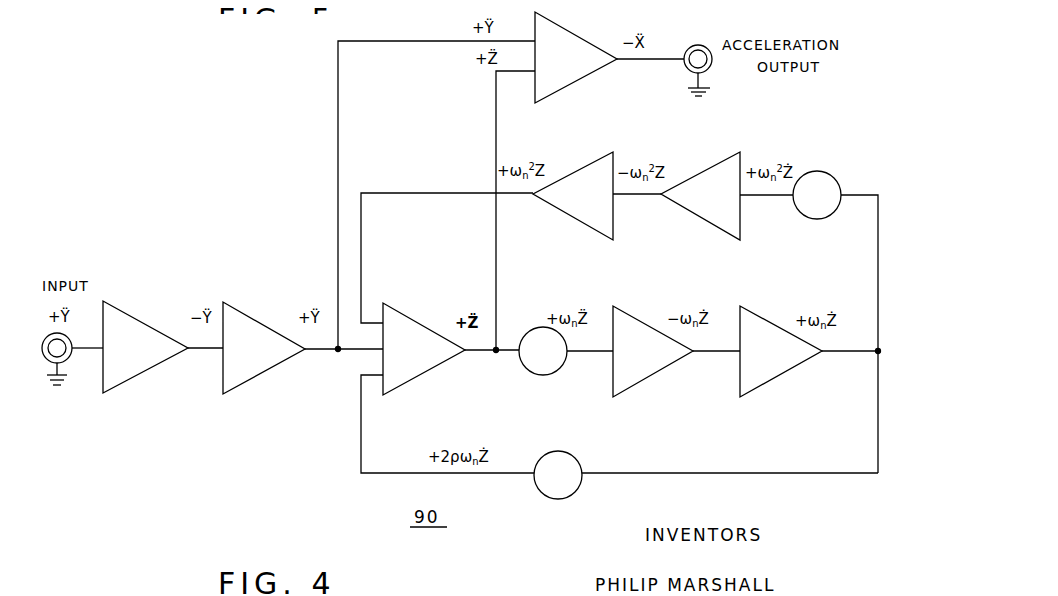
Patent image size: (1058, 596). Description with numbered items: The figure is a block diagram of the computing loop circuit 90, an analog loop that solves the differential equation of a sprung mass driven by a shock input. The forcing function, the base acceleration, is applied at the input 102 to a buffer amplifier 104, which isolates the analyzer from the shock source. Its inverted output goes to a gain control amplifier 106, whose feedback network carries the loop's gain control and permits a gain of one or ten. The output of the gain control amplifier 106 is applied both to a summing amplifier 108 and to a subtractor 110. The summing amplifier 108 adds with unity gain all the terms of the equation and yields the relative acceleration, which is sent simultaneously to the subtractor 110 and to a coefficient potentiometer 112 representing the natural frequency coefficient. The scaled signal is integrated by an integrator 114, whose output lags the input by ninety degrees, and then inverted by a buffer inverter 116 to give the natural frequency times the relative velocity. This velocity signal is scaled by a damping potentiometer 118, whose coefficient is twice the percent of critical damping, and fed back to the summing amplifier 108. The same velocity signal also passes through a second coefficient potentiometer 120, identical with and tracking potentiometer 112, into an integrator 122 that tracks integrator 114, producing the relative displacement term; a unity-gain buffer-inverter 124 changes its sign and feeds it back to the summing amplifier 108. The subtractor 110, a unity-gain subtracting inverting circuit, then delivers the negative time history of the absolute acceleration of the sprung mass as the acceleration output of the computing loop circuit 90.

The computing loop circuit 90 is at (698, 70).
The input 102 is at (68, 357).
The buffer amplifier 104 is at (130, 313).
The gain control amplifier 106 is at (247, 313).
The summing amplifier 108 is at (409, 316).
The subtractor 110 is at (572, 28).
The coefficient potentiometer 112 is at (530, 328).
The integrator 114 is at (636, 320).
The buffer inverter 116 is at (772, 320).
The damping potentiometer 118 is at (578, 462).
The ωn2 coefficient potentiometer 120 is at (826, 173).
The integrator 122 is at (720, 160).
The buffer-inverter 124 is at (592, 158).